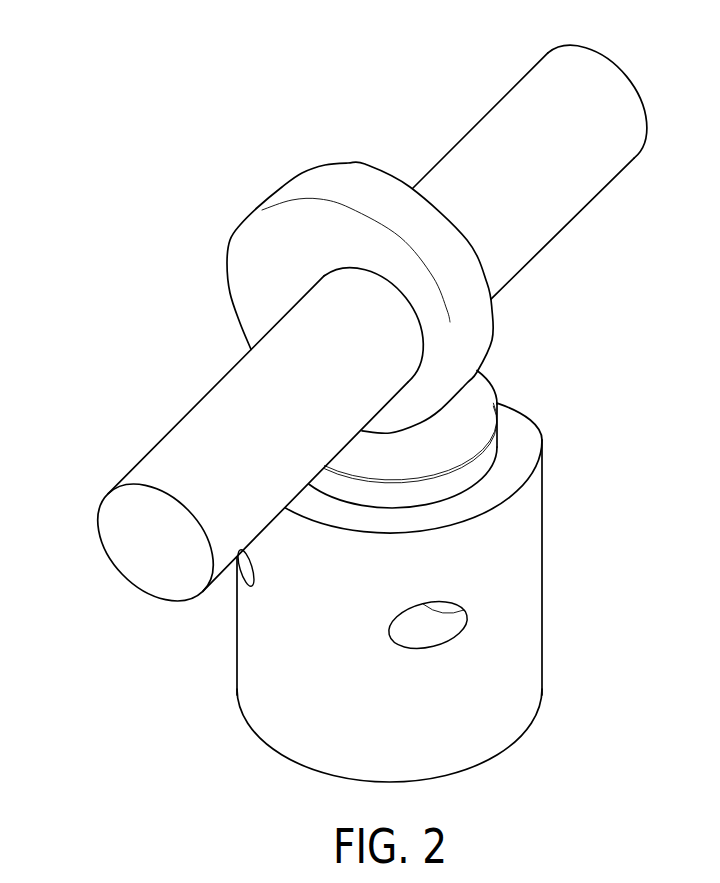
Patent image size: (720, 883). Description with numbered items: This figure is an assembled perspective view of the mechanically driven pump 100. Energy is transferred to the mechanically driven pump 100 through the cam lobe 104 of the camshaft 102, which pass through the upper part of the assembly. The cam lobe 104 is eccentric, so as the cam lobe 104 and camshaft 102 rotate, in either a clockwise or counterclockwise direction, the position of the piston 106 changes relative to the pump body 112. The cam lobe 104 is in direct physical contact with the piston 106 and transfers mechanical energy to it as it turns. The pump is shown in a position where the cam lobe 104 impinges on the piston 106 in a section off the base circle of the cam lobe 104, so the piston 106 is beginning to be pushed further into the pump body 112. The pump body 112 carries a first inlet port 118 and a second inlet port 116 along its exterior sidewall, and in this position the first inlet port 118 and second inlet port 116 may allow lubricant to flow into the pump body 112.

The mechanically driven pump 100 is at (97, 107).
The camshaft 102 is at (543, 177).
The cam lobe 104 is at (467, 282).
The piston 106 is at (477, 372).
The pump body 112 is at (542, 527).
The second inlet port 116 is at (468, 613).
The first inlet port 118 is at (242, 573).